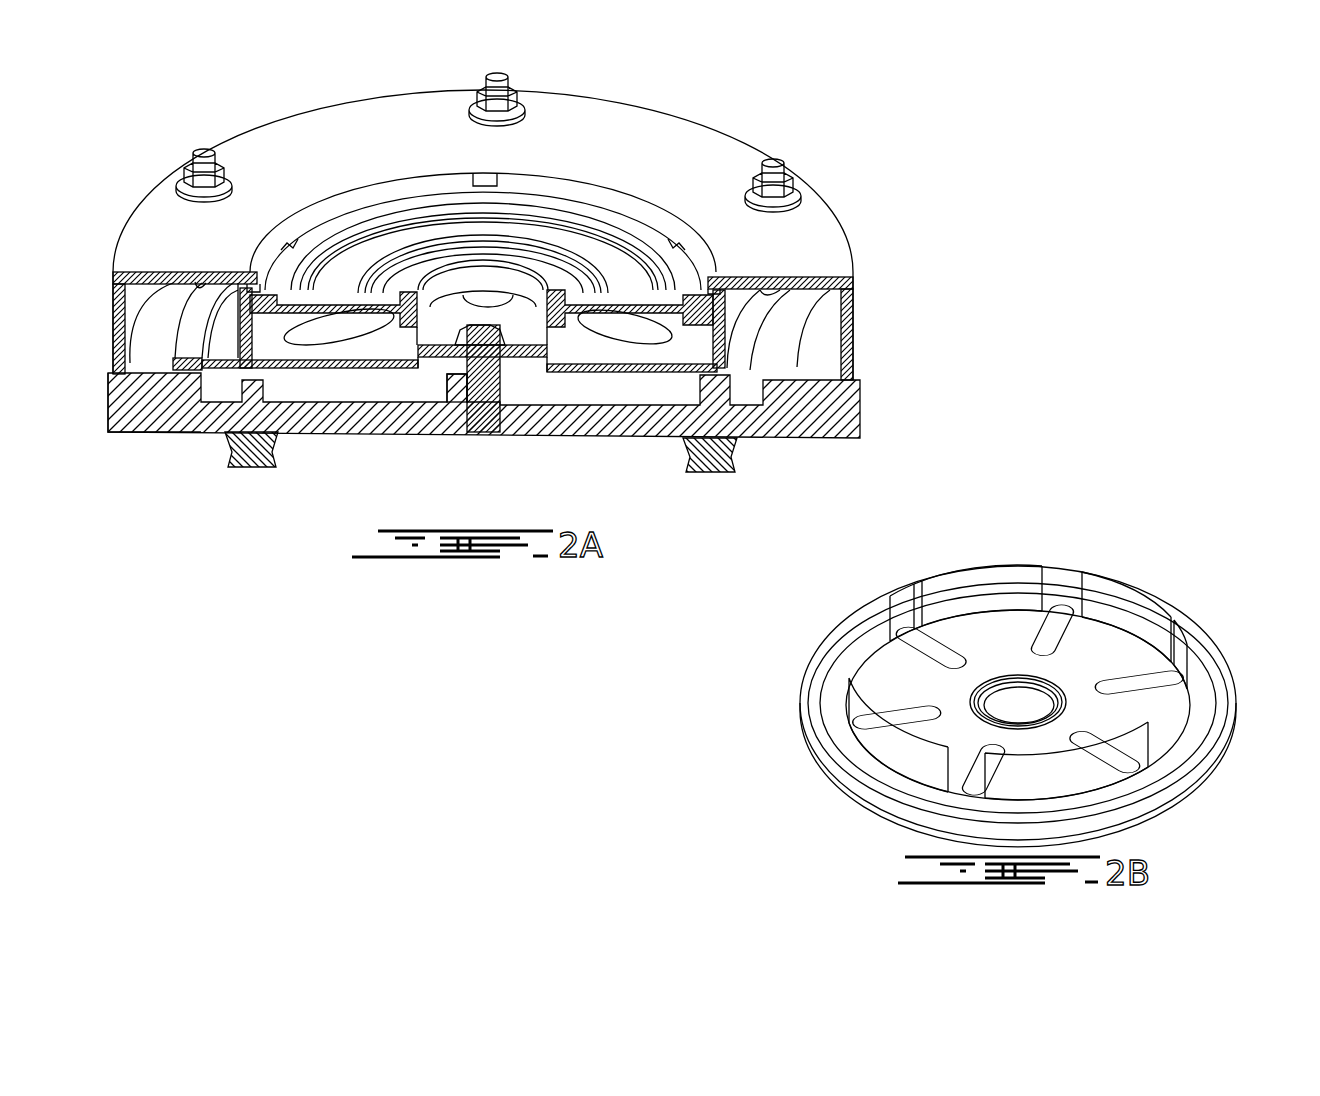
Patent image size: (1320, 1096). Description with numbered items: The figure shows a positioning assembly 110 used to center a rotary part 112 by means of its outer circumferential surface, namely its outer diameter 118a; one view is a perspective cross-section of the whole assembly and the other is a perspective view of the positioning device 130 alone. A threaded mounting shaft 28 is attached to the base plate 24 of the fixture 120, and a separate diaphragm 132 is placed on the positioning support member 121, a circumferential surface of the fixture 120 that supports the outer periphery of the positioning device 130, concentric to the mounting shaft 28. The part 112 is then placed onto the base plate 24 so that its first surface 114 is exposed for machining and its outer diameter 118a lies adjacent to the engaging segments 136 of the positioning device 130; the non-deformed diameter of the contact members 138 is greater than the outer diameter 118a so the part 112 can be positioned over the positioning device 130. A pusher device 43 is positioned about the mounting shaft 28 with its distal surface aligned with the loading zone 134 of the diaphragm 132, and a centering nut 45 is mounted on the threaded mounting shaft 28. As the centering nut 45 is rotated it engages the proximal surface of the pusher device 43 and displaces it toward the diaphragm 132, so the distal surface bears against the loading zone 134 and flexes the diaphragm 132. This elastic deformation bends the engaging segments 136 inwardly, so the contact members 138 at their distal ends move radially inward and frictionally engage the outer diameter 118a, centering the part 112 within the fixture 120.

In FIG. 2A, the positioning assembly 110 is at (886, 170).
In FIG. 2A, the part 112 is at (612, 262).
In FIG. 2A, the first surface 114 is at (375, 250).
In FIG. 2A, the fixture 120 is at (858, 411).
In FIG. 2A, the positioning support member 121 is at (151, 365).
In FIG. 2A, the base plate 24 is at (131, 402).
In FIG. 2A, the outer diameter 118a is at (261, 440).
In FIG. 2A, the positioning device 130 is at (589, 382).
In FIG. 2B, the positioning device 130 is at (786, 707).
In FIG. 2A, the diaphragm 132 is at (345, 350).
In FIG. 2B, the diaphragm 132 is at (902, 692).
In FIG. 2B, the loading zone 134 is at (1000, 682).
In FIG. 2B, the engaging segments 136 is at (1178, 716).
In FIG. 2B, the contact members 138 is at (1080, 568).
In FIG. 2A, the mounting shaft 28 is at (452, 384).
In FIG. 2A, the centering nut 45 is at (491, 346).
In FIG. 2A, the pusher device 43 is at (529, 340).